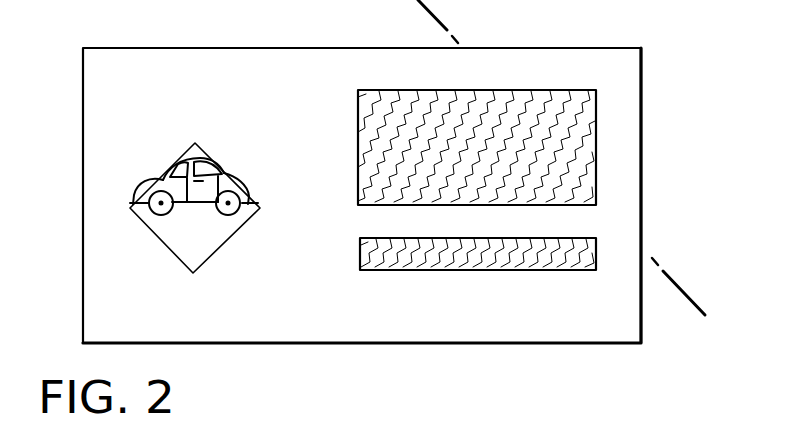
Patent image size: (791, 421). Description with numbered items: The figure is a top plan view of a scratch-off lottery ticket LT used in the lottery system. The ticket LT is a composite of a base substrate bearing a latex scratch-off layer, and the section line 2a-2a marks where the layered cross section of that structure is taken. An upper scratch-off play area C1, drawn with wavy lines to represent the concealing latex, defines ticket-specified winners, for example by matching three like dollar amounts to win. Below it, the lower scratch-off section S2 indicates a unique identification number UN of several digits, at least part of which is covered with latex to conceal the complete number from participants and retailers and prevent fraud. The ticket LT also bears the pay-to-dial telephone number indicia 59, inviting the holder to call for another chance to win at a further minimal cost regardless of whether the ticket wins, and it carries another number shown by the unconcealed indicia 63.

The section line 2a- 2a is at (414, 2).
The scratch-off lottery ticket LT is at (650, 197).
The scratch-off play area (concealed indicia) C1 is at (596, 121).
The unique identification number UN is at (596, 252).
The lower scratch-off section S2 is at (623, 292).
The pay-to-dial telephone number indicia 59 is at (523, 335).
The unconcealed indicia 63 is at (86, 332).